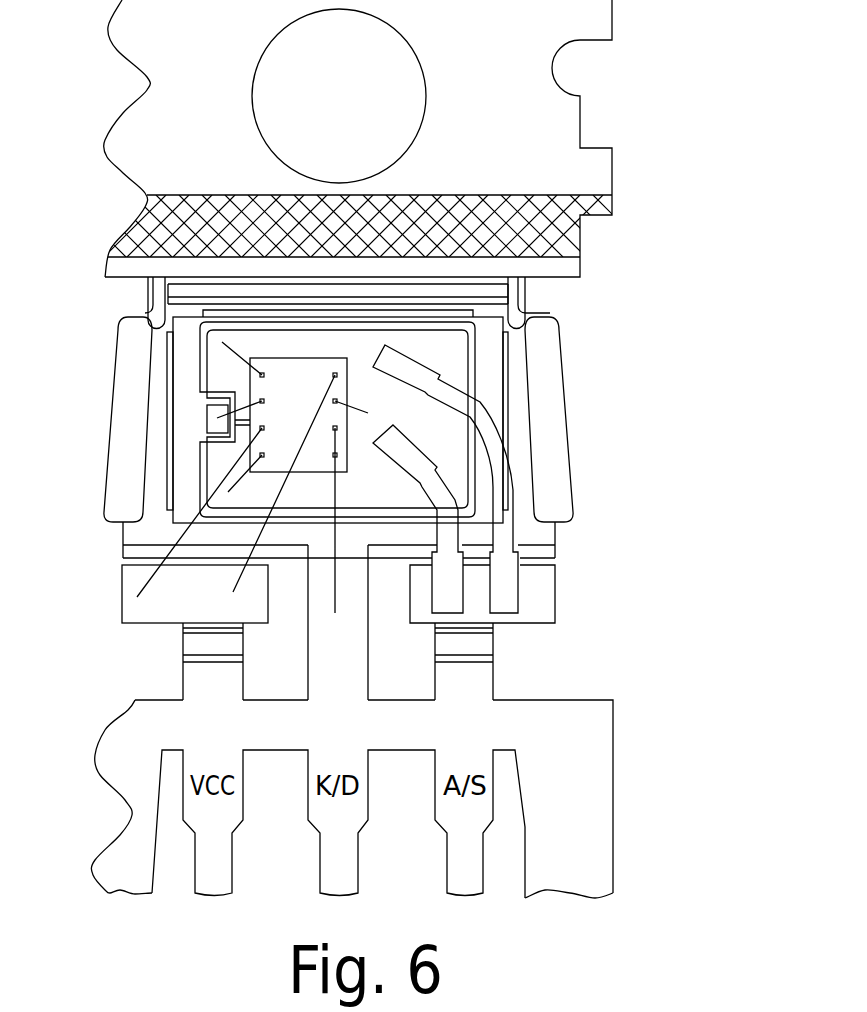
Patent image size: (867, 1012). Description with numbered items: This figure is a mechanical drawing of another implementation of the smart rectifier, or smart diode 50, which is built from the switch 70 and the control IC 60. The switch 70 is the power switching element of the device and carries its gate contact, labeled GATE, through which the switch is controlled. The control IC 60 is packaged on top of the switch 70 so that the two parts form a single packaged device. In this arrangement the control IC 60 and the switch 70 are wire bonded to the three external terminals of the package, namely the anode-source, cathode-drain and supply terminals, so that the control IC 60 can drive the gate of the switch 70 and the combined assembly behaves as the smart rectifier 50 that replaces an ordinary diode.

The smart rectifier 50 is at (662, 124).
The control IC 60 is at (263, 387).
The switch 70 is at (225, 367).
The gate contact GATE is at (213, 423).